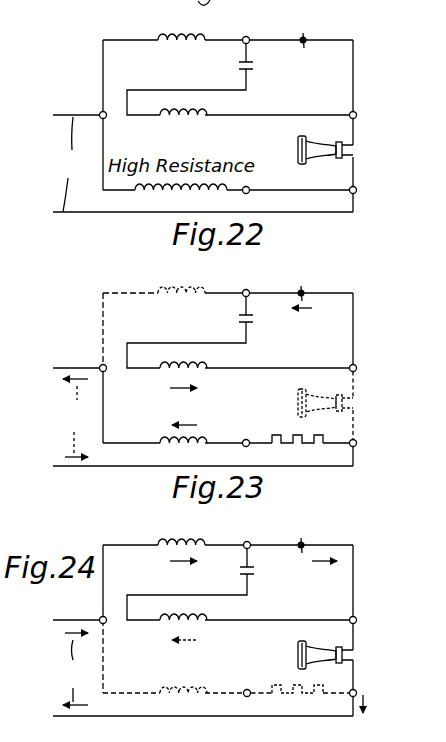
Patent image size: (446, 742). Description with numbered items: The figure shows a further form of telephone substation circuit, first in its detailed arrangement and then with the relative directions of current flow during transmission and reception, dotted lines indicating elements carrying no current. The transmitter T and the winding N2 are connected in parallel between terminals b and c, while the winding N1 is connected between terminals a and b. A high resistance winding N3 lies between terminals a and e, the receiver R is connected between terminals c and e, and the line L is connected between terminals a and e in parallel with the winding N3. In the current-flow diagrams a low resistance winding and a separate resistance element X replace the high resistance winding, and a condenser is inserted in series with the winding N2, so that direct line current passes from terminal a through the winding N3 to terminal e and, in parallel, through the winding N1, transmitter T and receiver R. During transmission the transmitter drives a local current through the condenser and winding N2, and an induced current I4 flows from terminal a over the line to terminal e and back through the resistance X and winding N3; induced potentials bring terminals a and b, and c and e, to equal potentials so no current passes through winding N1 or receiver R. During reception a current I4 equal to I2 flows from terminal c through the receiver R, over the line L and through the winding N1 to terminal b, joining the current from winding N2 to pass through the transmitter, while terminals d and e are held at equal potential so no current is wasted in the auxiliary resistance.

In FIG. 22, the terminal a is at (94, 106).
In FIG. 23, the terminal a is at (94, 359).
In FIG. 24, the terminal a is at (94, 611).
In FIG. 22, the terminal b is at (246, 30).
In FIG. 23, the terminal b is at (246, 283).
In FIG. 24, the terminal b is at (247, 535).
In FIG. 22, the terminal c is at (360, 116).
In FIG. 23, the terminal c is at (360, 368).
In FIG. 24, the terminal c is at (360, 620).
In FIG. 22, the terminal d is at (251, 198).
In FIG. 23, the terminal d is at (251, 433).
In FIG. 24, the terminal d is at (252, 683).
In FIG. 22, the terminal e is at (360, 190).
In FIG. 23, the terminal e is at (360, 443).
In FIG. 24, the terminal e is at (359, 685).
In FIG. 22, the transmitter T is at (309, 32).
In FIG. 23, the transmitter T is at (301, 293).
In FIG. 24, the transmitter T is at (301, 545).
In FIG. 22, the receiver R is at (325, 160).
In FIG. 23, the receiver R is at (325, 403).
In FIG. 24, the receiver R is at (325, 655).
In FIG. 22, the line L is at (68, 164).
In FIG. 22, the winding N1 is at (181, 54).
In FIG. 23, the winding N1 is at (181, 290).
In FIG. 24, the winding N1 is at (181, 542).
In FIG. 22, the winding N2 is at (183, 126).
In FIG. 23, the winding N2 is at (183, 365).
In FIG. 24, the winding N2 is at (183, 617).
In FIG. 22, the high resistance winding N3 is at (181, 198).
In FIG. 23, the high resistance winding N3 is at (176, 451).
In FIG. 24, the high resistance winding N3 is at (183, 690).
In FIG. 23, the resistance element X is at (295, 448).
In FIG. 24, the resistance element X is at (297, 689).
In FIG. 23, the induced current I4 is at (195, 371).
In FIG. 24, the induced current I4 is at (182, 622).
In FIG. 24, the current I2 is at (199, 676).